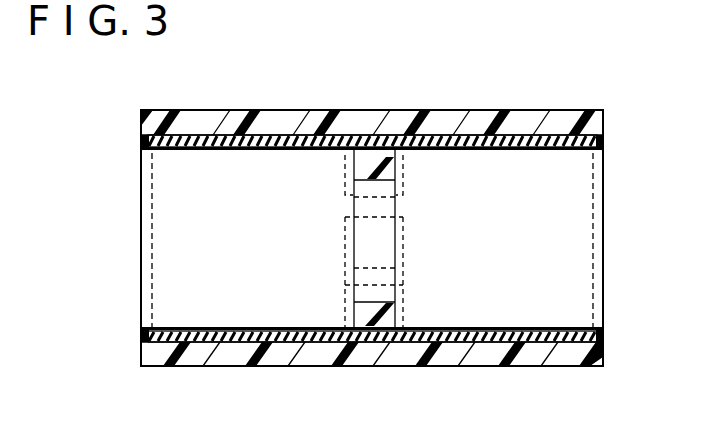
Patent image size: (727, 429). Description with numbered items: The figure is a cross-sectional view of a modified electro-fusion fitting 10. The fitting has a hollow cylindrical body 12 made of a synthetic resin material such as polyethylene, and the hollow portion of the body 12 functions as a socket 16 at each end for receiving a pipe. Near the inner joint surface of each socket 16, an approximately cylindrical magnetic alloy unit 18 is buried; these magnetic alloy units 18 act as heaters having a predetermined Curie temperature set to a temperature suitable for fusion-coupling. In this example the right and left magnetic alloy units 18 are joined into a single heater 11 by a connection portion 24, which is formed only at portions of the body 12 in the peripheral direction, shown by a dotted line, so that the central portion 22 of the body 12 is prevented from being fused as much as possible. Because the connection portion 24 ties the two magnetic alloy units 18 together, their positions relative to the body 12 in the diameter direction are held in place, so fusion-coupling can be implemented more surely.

The electro-fusion fitting 10 is at (657, 69).
The heater 11 is at (198, 121).
The body 12 is at (490, 118).
The socket 16 is at (165, 213).
The magnetic alloy unit 18 is at (283, 345).
The central portion 22 is at (400, 312).
The connection portion 24 is at (365, 134).